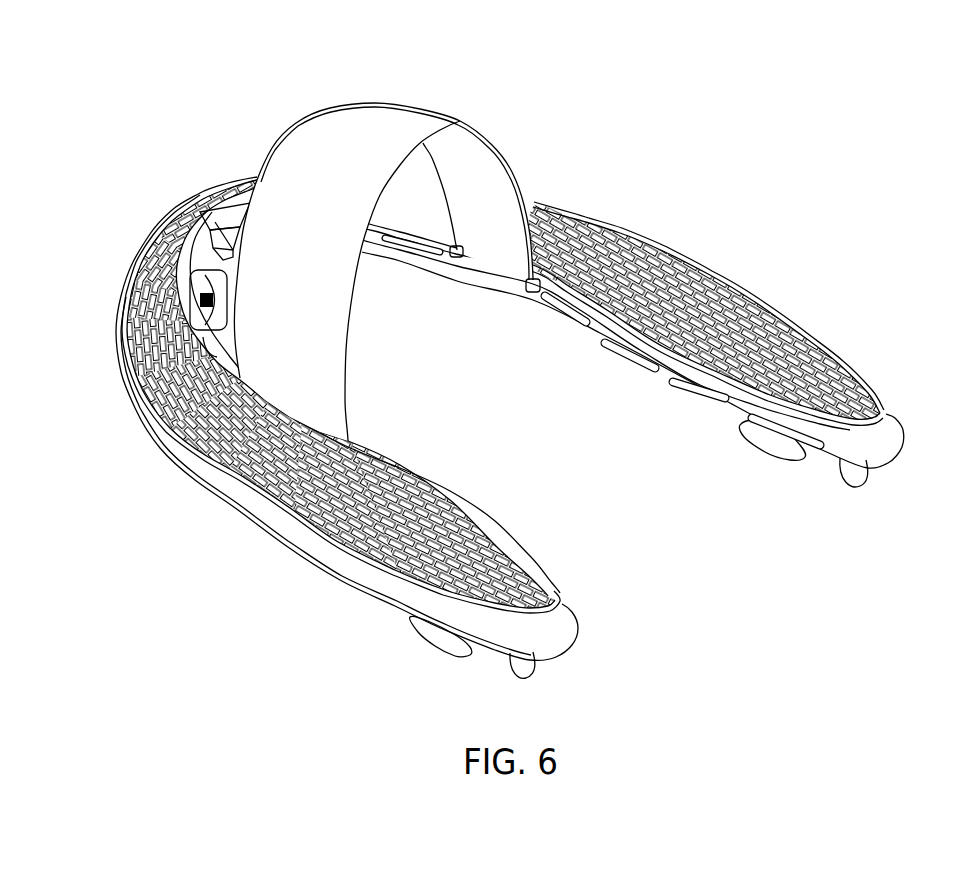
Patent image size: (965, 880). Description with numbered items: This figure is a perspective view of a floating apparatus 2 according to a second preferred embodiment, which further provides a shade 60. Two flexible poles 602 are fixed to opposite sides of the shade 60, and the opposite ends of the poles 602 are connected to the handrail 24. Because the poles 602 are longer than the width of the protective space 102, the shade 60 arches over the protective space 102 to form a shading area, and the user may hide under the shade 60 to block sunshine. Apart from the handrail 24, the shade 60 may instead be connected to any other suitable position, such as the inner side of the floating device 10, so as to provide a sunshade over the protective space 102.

The floating apparatus 2 is at (476, 440).
The floating device 10 is at (905, 405).
The handrail 24 is at (593, 331).
The shade 60 is at (418, 235).
The flexible poles 602 is at (520, 180).
The protective space 102 is at (470, 412).